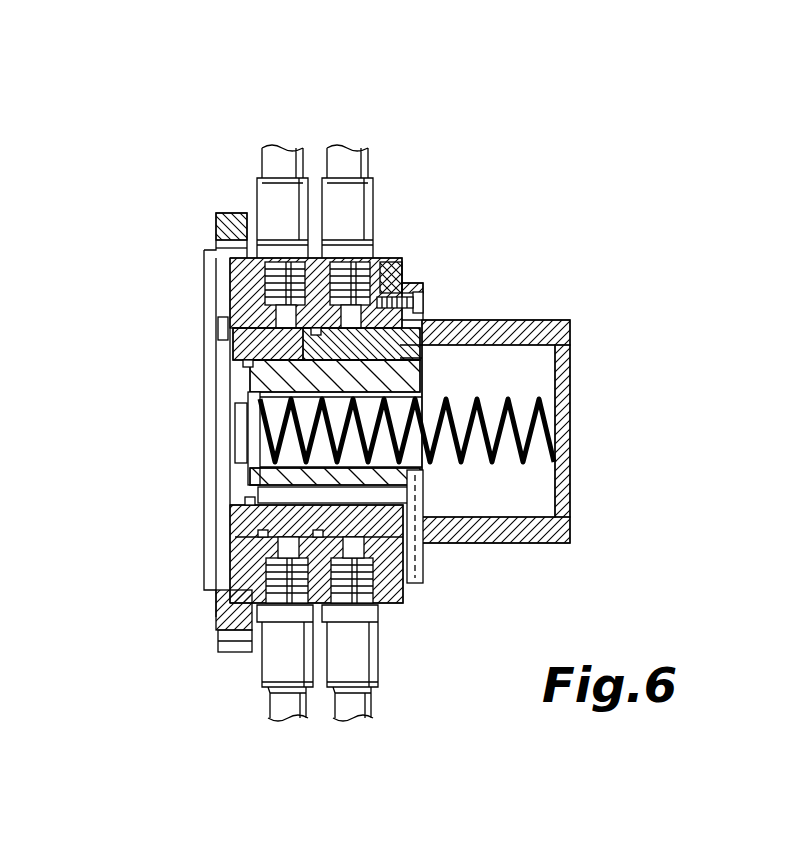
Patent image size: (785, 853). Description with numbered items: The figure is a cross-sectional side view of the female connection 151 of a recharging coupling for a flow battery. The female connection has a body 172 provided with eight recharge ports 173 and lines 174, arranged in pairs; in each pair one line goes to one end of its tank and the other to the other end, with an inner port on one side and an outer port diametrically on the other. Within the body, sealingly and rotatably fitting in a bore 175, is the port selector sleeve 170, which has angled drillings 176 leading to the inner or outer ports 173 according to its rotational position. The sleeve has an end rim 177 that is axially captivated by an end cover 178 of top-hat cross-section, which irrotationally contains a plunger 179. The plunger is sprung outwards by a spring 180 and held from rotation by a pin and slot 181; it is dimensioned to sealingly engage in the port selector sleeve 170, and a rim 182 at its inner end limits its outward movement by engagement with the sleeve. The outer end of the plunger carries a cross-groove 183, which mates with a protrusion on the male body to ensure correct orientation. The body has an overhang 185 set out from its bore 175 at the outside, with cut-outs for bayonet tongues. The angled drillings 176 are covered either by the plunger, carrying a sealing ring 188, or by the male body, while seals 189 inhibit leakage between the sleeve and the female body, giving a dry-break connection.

The female connection 151 is at (204, 156).
The port selector sleeve 170 is at (255, 350).
The body 172 is at (393, 263).
The recharge ports 173 is at (223, 677).
The lines 174 is at (348, 163).
The bore 175 is at (262, 318).
The angled drillings 176 is at (265, 386).
The end rim 177 is at (443, 330).
The end cover 178 is at (563, 367).
The plunger 179 is at (422, 477).
The spring 180 is at (512, 450).
The pin and slot 181 is at (468, 505).
The rim 182 is at (412, 353).
The cross-groove 183 is at (243, 463).
The overhang 185 is at (207, 272).
The sealing ring 188 is at (250, 502).
The seals 189 is at (265, 340).